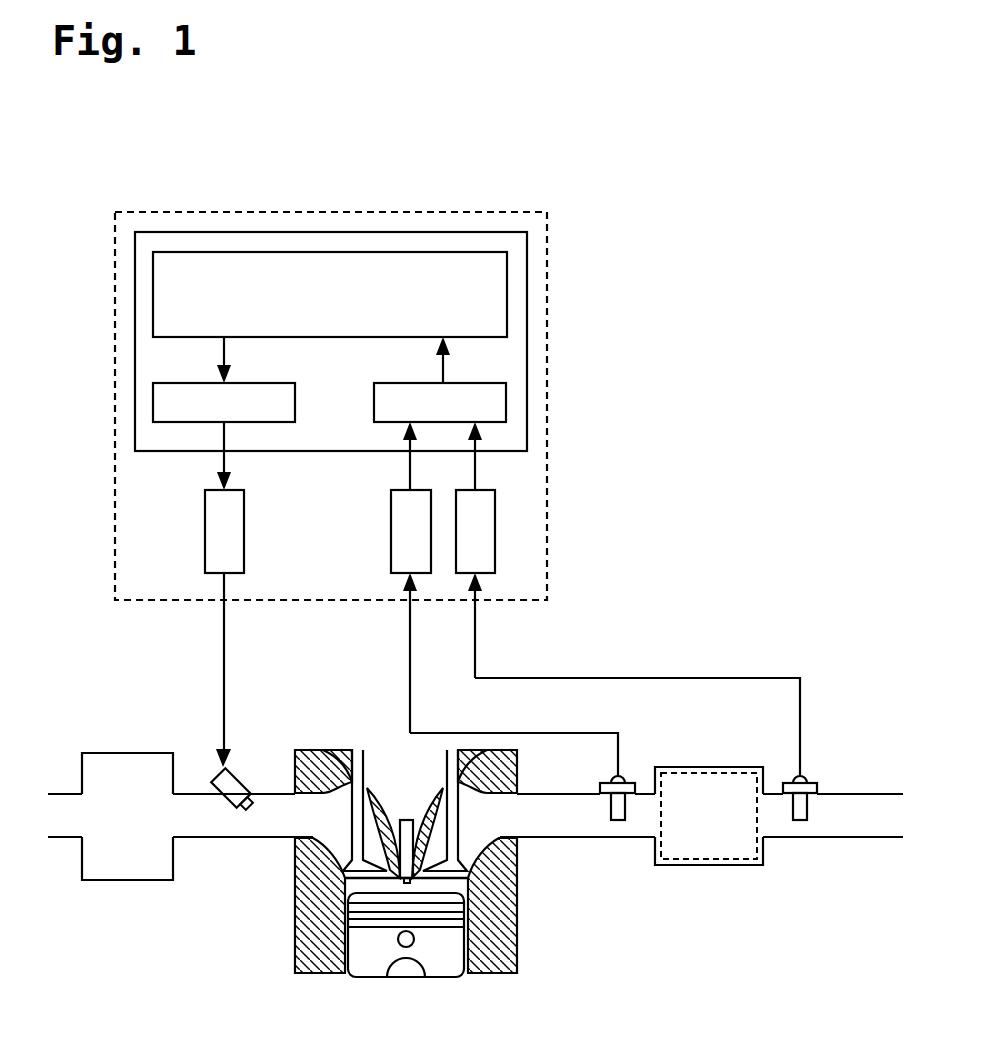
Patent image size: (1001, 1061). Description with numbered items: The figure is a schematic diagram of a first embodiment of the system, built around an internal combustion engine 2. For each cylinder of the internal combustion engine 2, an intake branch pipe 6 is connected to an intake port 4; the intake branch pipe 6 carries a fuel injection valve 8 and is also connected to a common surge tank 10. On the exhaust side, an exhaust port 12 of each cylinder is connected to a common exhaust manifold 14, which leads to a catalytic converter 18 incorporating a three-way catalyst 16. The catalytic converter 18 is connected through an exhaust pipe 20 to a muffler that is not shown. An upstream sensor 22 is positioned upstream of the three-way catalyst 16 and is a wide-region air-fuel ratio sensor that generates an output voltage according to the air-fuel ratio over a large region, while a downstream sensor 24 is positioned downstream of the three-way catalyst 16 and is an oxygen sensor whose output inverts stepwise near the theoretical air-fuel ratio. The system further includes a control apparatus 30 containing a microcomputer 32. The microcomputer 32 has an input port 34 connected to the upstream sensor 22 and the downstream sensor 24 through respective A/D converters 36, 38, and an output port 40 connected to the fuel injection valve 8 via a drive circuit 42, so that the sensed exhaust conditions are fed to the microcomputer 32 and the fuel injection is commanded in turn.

The internal combustion engine 2 is at (424, 863).
The intake port 4 is at (297, 870).
The intake branch pipe 6 is at (203, 825).
The fuel injection valve 8 is at (239, 776).
The surge tank 10 is at (127, 860).
The exhaust port 12 is at (518, 870).
The exhaust manifold 14 is at (593, 832).
The three-way catalyst 16 is at (685, 843).
The catalytic converter 18 is at (747, 866).
The exhaust pipe 20 is at (857, 825).
The upstream sensor 22 is at (628, 780).
The downstream sensor 24 is at (810, 780).
The control apparatus 30 is at (547, 255).
The microcomputer 32 is at (527, 325).
The input port 34 is at (506, 400).
The A/D converter 36 is at (391, 552).
The A/D converter 38 is at (495, 525).
The output port 40 is at (153, 402).
The drive circuit 42 is at (205, 528).